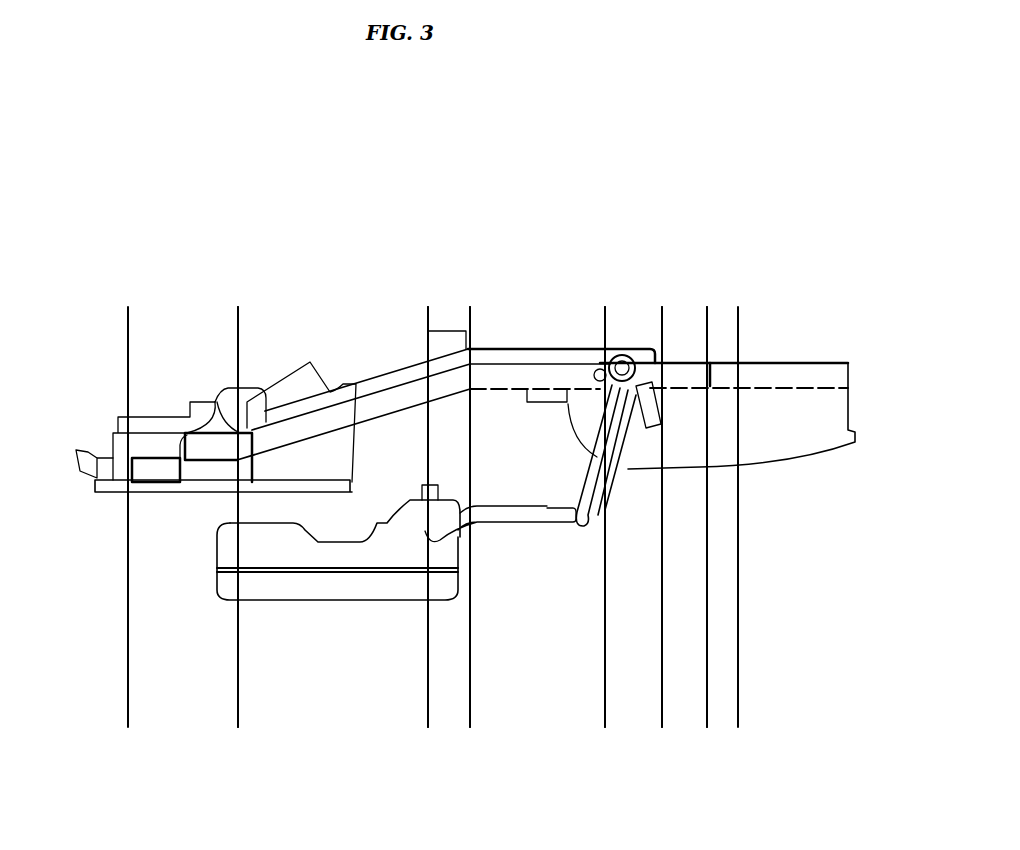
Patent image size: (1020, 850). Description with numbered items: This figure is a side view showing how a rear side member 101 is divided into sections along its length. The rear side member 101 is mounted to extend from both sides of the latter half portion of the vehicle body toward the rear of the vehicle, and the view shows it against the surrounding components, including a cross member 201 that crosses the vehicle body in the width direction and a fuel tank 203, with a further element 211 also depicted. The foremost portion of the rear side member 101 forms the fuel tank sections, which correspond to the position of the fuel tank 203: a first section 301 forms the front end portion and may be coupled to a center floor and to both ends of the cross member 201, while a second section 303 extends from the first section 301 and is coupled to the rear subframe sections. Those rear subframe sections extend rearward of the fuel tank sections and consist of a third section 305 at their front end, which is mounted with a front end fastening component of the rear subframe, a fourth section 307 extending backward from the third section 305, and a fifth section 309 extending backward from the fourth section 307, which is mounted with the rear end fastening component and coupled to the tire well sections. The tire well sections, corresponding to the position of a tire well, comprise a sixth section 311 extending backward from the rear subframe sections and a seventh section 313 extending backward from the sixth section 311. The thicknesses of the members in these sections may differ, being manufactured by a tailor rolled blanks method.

The rear side member 101 is at (397, 402).
The cross member 201 is at (153, 472).
The fuel tank 203 is at (318, 585).
The third member 211 is at (765, 438).
The first section 301 is at (188, 315).
The second section 303 is at (344, 315).
The third section 305 is at (461, 315).
The fourth section 307 is at (548, 315).
The fifth section 309 is at (643, 315).
The sixth section 311 is at (694, 315).
The seventh section 313 is at (736, 315).